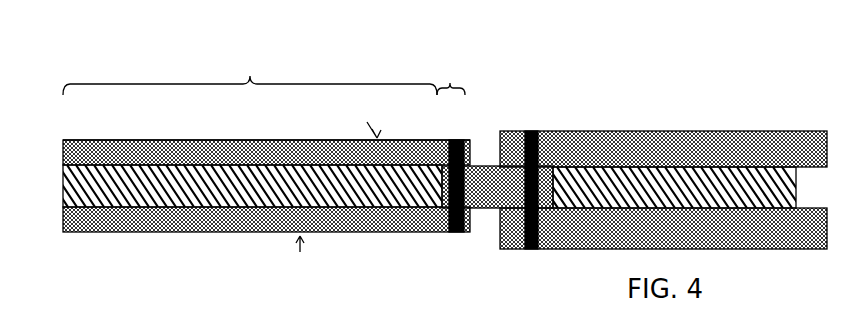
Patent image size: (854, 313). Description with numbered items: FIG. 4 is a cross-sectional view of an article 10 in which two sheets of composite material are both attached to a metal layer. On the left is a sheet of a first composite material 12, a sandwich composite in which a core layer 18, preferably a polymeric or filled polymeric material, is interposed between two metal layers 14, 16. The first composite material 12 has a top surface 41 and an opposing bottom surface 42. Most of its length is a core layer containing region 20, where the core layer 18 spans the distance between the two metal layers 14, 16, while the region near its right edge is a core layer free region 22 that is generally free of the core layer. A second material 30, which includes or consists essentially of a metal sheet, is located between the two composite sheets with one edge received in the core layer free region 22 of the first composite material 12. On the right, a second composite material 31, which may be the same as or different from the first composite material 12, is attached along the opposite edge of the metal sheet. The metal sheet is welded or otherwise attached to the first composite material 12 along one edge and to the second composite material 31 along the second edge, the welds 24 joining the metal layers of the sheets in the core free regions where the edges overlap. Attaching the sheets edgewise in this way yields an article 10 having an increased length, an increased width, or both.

The article 10 is at (433, 154).
The first composite material 12 is at (190, 142).
The metal layer 14 is at (122, 142).
The metal layer 16 is at (163, 228).
The core layer 18 is at (263, 180).
The core layer containing region 20 is at (250, 72).
The core layer free region 22 is at (451, 76).
The weld 24 is at (455, 234).
The second material 30 is at (473, 151).
The second composite material 31 is at (688, 159).
The top surface 41 is at (368, 120).
The bottom surface 42 is at (300, 253).